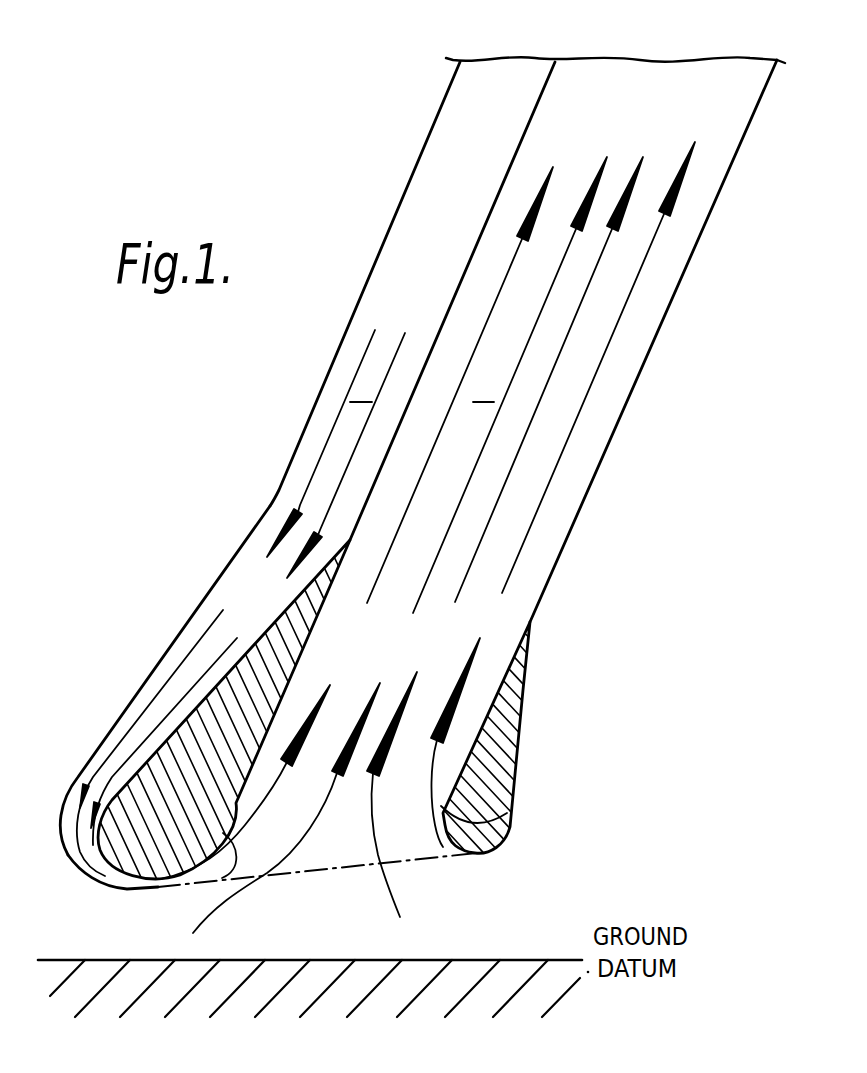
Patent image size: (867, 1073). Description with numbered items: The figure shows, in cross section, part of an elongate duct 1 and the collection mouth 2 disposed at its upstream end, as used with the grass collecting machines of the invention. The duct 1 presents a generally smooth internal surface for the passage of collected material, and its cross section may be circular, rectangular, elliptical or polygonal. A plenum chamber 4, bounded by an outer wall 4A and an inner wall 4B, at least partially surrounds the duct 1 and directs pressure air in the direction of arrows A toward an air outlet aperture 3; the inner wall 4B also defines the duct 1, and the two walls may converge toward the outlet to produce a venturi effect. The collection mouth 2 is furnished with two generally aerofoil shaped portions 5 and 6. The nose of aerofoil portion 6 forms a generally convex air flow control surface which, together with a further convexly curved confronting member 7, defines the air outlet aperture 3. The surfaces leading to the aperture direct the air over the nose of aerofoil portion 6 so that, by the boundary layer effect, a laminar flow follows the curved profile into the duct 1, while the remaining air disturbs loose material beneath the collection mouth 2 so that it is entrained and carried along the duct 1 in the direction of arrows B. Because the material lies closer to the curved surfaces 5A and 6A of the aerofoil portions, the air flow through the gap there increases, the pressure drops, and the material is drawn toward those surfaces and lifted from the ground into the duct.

The elongate duct 1 is at (628, 118).
The collection mouth 2 is at (322, 857).
The air outlet aperture 3 is at (145, 887).
The plenum chamber 4 is at (383, 298).
The outer wall of the plenum chamber 4A is at (383, 242).
The inner wall of the plenum chamber 4B is at (513, 163).
The aerofoil shaped portion 5 is at (483, 817).
The curved surface of aerofoil portion 5A is at (443, 797).
The aerofoil portion 6 is at (120, 850).
The curved surface of aerofoil portion 6A is at (220, 880).
The confronting member 7 is at (103, 888).